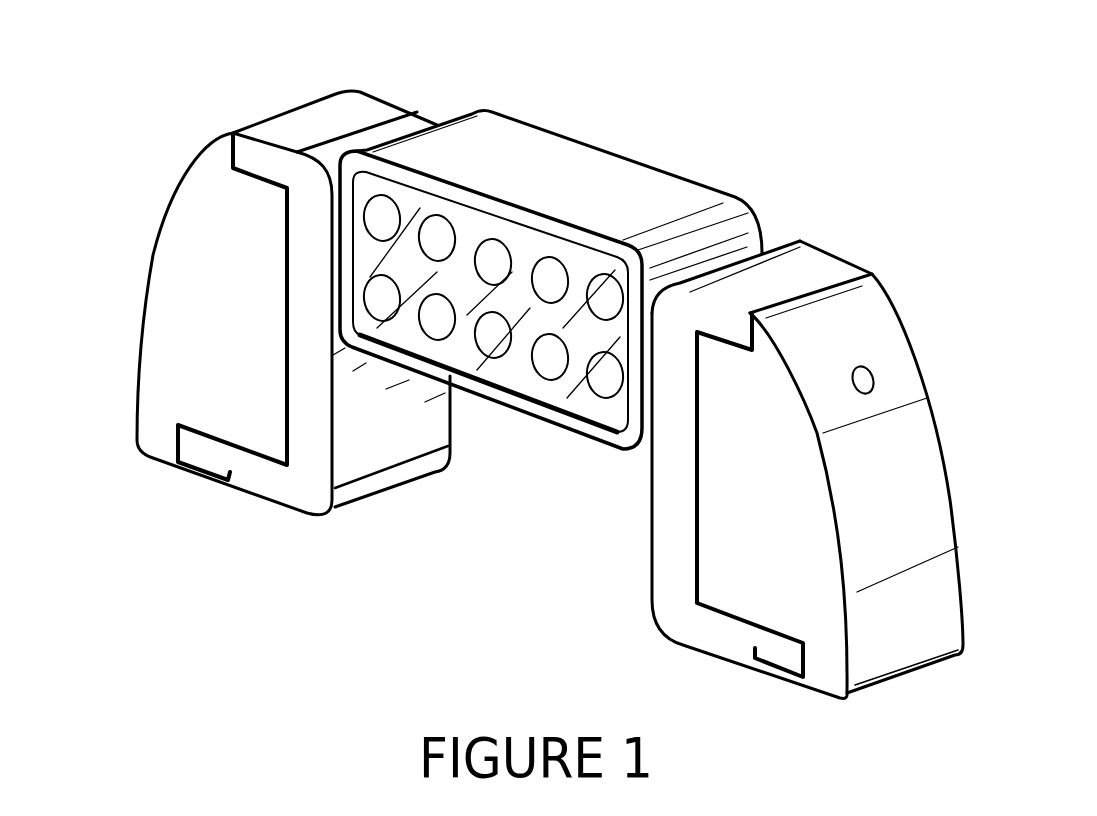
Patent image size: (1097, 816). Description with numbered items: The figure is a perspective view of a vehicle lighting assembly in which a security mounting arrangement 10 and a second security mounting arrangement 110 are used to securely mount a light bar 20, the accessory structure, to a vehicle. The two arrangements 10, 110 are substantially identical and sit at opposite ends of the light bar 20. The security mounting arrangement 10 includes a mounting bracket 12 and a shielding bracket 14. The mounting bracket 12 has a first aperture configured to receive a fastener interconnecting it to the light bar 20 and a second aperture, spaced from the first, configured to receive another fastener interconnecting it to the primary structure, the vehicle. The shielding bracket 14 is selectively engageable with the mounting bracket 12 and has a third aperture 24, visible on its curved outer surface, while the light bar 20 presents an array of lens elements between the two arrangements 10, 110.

The security mounting arrangement 10 is at (910, 214).
The mounting bracket 12 is at (667, 558).
The shielding bracket 14 is at (955, 618).
The light bar 20 is at (648, 156).
The third aperture 24 is at (860, 379).
The second security mounting arrangement 110 is at (203, 100).